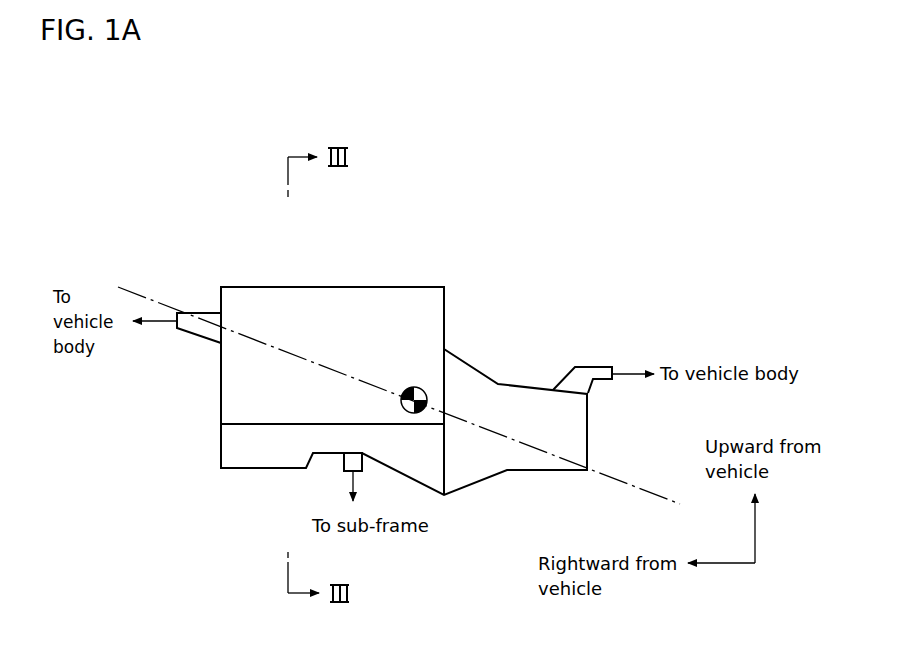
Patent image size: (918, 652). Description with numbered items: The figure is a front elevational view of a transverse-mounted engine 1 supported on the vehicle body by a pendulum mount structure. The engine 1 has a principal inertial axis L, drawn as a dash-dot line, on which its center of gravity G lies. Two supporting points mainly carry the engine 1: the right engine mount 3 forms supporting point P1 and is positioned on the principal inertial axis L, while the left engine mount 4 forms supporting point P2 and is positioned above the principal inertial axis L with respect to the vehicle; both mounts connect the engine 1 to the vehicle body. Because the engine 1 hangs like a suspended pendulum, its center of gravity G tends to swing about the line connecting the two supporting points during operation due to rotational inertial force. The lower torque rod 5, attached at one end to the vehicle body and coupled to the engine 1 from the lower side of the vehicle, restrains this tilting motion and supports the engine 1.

The engine 1 is at (317, 322).
The right engine mount 3 is at (193, 313).
The left engine mount 4 is at (590, 372).
The lower torque rod 5 is at (333, 462).
The center of gravity G is at (414, 387).
The principal inertial axis L is at (627, 483).